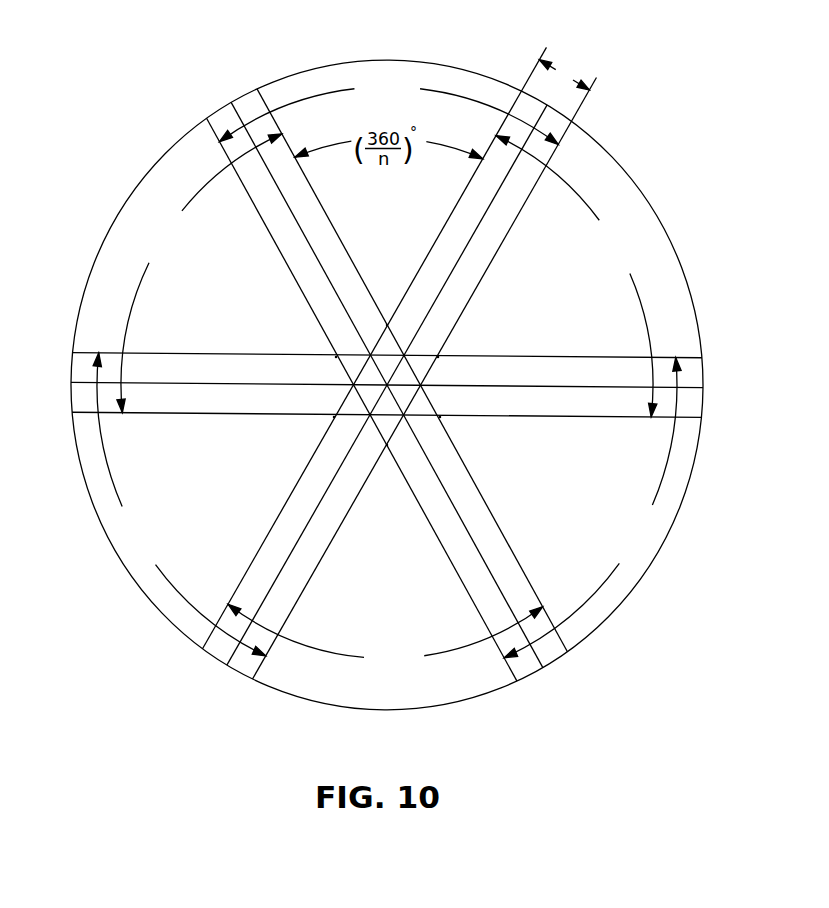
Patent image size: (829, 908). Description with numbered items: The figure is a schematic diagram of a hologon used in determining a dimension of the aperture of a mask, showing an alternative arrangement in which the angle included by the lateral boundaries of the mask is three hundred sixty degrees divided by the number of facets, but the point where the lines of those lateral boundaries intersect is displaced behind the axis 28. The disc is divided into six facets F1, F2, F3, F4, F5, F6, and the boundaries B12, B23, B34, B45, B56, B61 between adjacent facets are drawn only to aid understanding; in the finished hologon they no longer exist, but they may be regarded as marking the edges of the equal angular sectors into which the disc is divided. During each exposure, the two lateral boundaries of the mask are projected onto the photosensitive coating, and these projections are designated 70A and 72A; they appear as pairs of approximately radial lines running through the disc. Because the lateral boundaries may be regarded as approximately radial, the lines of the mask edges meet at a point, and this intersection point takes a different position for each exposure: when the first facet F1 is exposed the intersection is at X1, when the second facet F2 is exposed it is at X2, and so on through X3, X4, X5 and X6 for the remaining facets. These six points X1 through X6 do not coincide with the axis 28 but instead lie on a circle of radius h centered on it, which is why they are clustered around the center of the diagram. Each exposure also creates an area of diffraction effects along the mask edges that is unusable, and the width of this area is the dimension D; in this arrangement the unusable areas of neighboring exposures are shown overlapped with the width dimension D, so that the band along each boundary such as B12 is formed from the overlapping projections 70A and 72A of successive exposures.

The axis 28 is at (378, 383).
The projection of mask lateral boundary 70A is at (548, 527).
The projection of mask lateral boundary 72A is at (508, 232).
The facet boundary B12 is at (524, 110).
The facet boundary B23 is at (696, 383).
The facet boundary B34 is at (540, 662).
The facet boundary B45 is at (231, 656).
The facet boundary B56 is at (82, 386).
The facet boundary B61 is at (230, 108).
The facet F1 is at (388, 109).
The facet F2 is at (576, 276).
The facet F3 is at (592, 507).
The facet F4 is at (385, 640).
The facet F5 is at (179, 504).
The facet F6 is at (199, 273).
The width dimension D is at (558, 84).
The point of intersection of mask edge lines X1 is at (386, 447).
The point of intersection of mask edge lines X2 is at (333, 421).
The point of intersection of mask edge lines X3 is at (332, 352).
The point of intersection of mask edge lines X4 is at (387, 322).
The point of intersection of mask edge lines X5 is at (455, 350).
The point of intersection of mask edge lines X6 is at (458, 428).